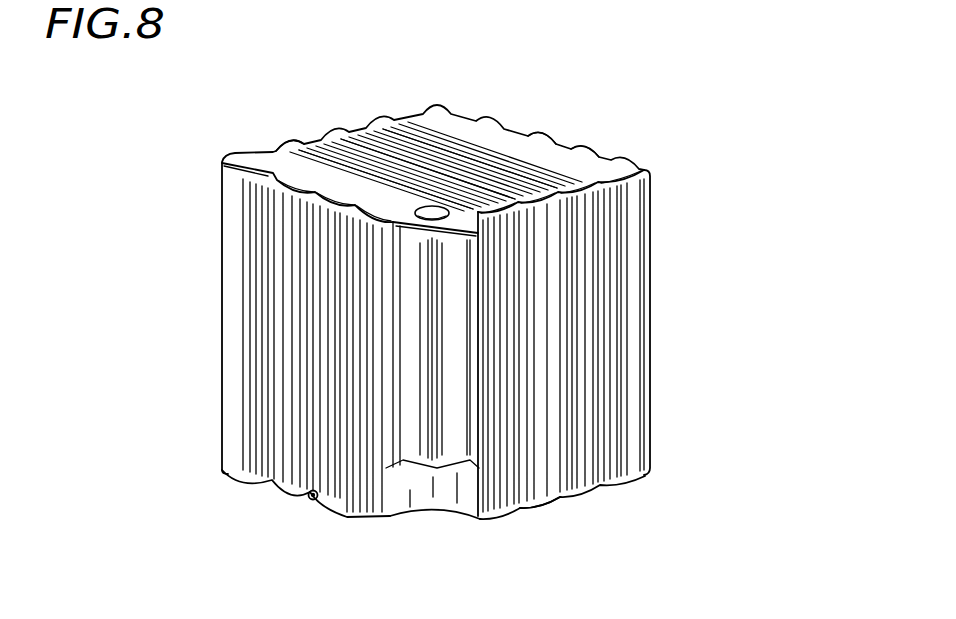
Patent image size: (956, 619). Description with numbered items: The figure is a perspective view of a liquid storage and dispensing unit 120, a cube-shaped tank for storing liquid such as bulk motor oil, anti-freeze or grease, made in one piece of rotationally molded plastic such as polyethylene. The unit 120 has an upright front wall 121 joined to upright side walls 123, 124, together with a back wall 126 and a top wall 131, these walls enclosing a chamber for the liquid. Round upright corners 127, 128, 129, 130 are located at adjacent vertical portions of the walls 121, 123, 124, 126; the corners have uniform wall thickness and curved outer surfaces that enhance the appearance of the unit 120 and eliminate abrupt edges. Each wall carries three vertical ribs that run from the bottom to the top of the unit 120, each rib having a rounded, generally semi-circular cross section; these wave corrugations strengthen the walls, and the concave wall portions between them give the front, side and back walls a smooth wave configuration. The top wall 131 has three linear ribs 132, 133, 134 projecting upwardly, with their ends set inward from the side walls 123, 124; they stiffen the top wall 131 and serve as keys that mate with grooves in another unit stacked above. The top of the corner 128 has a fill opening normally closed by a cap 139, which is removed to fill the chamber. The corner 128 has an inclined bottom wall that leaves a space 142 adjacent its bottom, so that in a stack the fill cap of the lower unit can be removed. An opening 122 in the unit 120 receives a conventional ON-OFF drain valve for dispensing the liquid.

The liquid storage and dispensing unit 120 is at (687, 152).
The front wall 121 is at (282, 478).
The opening 122 is at (315, 502).
The side wall 123 is at (287, 147).
The side wall 124 is at (547, 493).
The back wall 126 is at (523, 133).
The round upright corner 127 is at (230, 237).
The round upright corner 128 is at (452, 423).
The round upright corner 129 is at (635, 310).
The round upright corner 130 is at (434, 110).
The top wall 131 is at (590, 155).
The linear rib 132 is at (317, 143).
The linear rib 133 is at (360, 130).
The linear rib 134 is at (392, 123).
The cap 139 is at (413, 207).
The space 142 is at (410, 490).